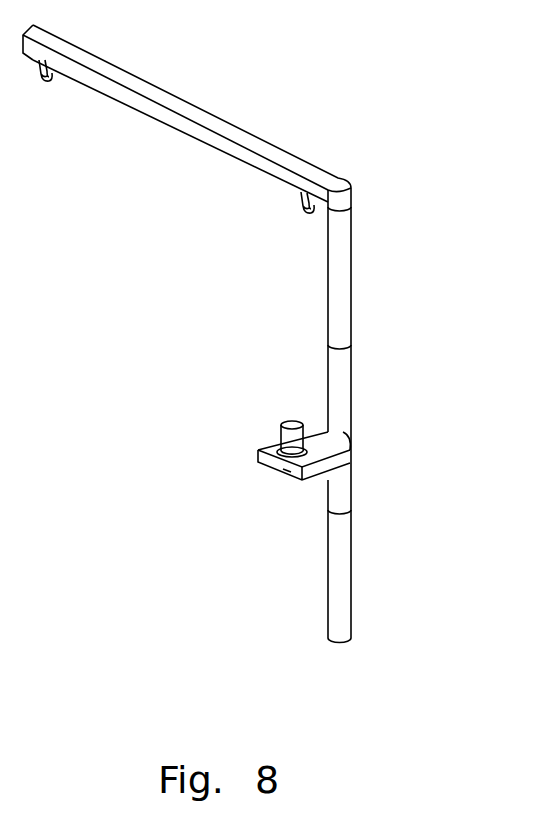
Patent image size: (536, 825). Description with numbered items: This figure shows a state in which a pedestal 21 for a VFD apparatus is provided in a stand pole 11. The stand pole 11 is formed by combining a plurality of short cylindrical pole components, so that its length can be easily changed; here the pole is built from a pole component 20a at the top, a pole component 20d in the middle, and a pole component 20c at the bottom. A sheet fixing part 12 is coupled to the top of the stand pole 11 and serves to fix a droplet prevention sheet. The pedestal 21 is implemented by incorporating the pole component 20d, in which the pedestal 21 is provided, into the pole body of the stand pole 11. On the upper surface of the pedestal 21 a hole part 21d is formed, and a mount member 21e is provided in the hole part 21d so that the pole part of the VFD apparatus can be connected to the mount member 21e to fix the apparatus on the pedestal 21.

The sheet fixing part 12 is at (183, 110).
The stand pole 11 is at (410, 415).
The pole component 20a is at (343, 302).
The pole component 20d is at (343, 405).
The pole component 20c is at (343, 580).
The pedestal 21 is at (238, 458).
The mount member 21e is at (280, 432).
The hole part 21d is at (280, 483).